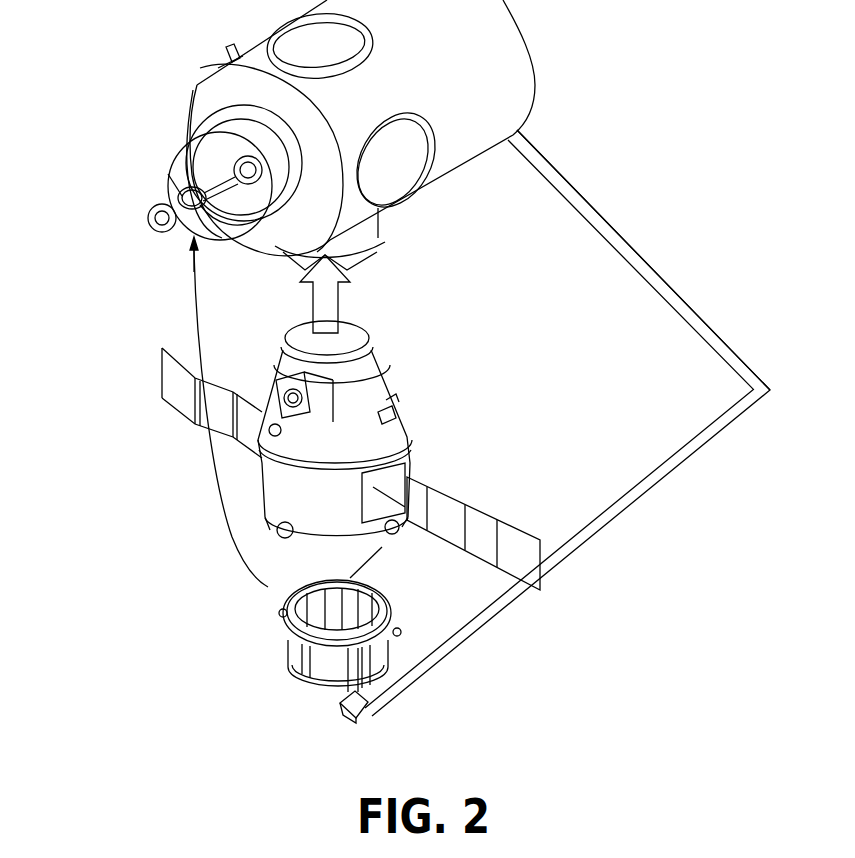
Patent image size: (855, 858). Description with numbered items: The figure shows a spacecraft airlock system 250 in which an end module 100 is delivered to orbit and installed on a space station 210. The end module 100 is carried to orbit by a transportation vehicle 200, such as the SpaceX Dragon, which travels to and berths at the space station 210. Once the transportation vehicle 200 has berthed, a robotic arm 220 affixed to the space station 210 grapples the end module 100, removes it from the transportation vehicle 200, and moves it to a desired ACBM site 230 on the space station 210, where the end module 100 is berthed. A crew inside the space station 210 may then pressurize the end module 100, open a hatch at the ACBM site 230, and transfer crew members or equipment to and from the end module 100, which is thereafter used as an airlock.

The end module 100 is at (142, 127).
The transportation vehicle 200 is at (343, 458).
The space station 210 is at (440, 83).
The robotic arm 220 is at (630, 508).
The ACBM site 230 is at (227, 110).
The spacecraft airlock system 250 is at (658, 47).